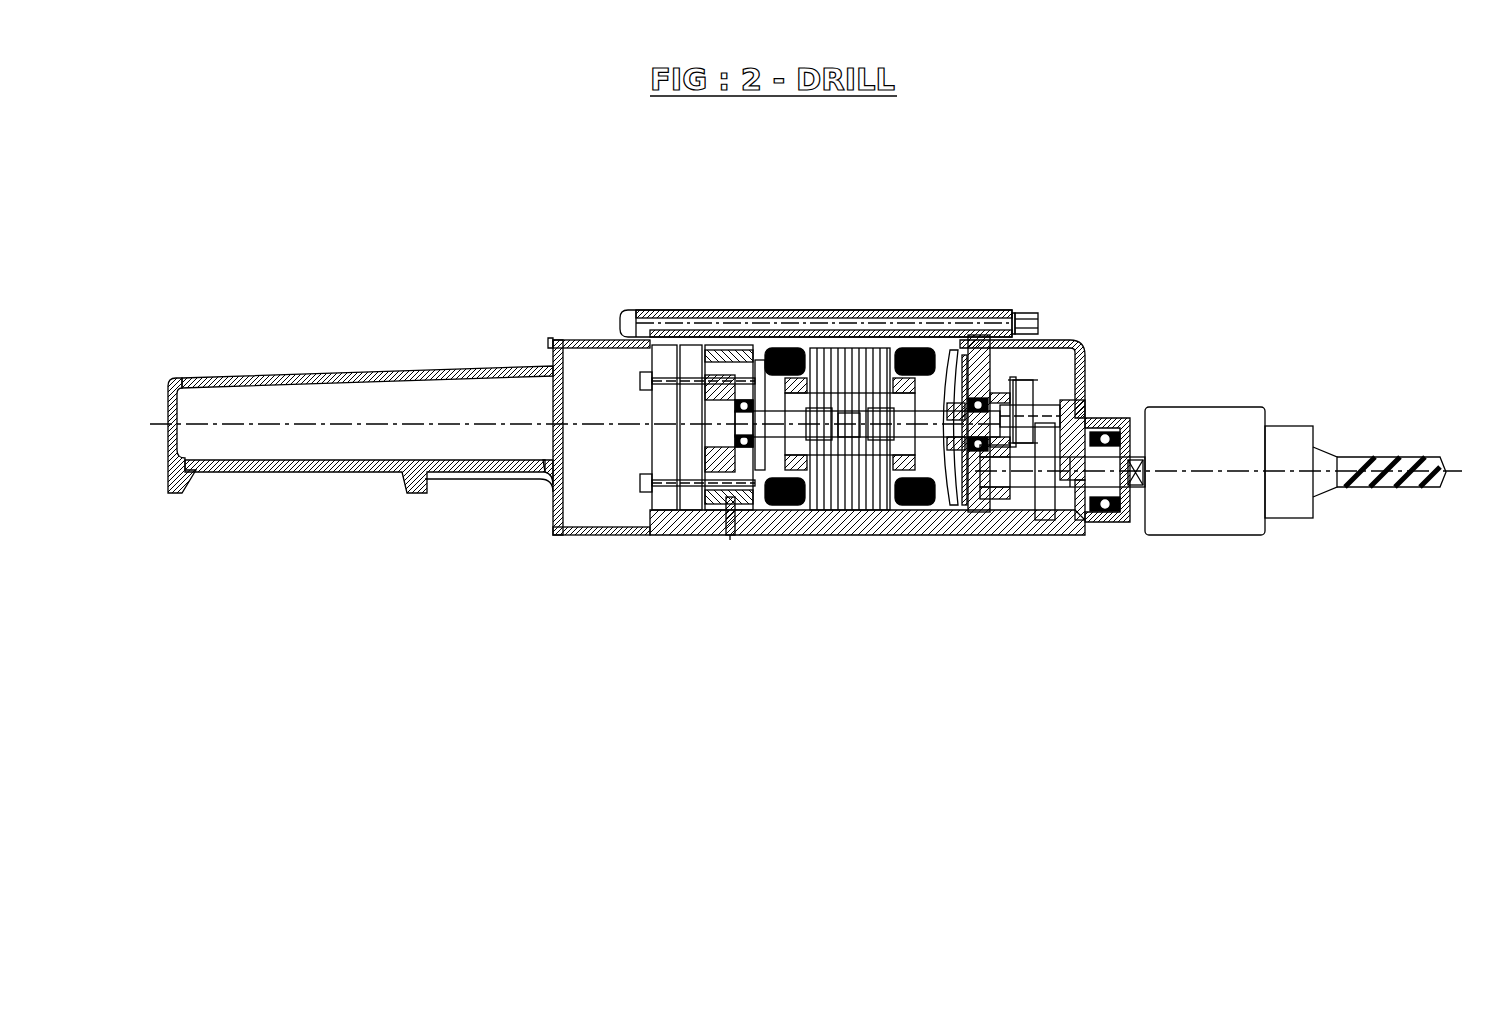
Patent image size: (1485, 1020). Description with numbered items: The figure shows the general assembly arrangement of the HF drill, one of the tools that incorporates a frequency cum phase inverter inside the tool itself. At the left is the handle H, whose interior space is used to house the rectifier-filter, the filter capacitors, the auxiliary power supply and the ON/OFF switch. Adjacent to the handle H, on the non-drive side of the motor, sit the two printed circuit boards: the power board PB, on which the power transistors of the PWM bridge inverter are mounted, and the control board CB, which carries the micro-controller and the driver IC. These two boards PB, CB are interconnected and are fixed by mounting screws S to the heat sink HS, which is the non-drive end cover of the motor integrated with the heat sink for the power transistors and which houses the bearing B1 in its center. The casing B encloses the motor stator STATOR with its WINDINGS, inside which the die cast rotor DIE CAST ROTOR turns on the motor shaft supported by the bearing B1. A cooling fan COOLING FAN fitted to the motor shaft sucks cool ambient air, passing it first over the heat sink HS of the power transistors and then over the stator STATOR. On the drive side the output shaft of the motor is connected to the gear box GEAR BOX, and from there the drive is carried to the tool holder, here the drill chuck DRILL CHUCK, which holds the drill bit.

The handle H is at (487, 366).
The control board CB is at (655, 346).
The power board PB is at (684, 346).
The bearing B1 is at (755, 398).
The casing B is at (860, 306).
The windings WINDINGS is at (922, 345).
The mounting screws S is at (1029, 310).
The heat sink HS is at (723, 533).
The stator STATOR is at (880, 512).
The die-cast rotor DIE CAST ROTOR is at (772, 512).
The cooling fan COOLING FAN is at (948, 515).
The gear box GEAR BOX is at (1057, 535).
The drill chuck DRILL CHUCK is at (1165, 532).